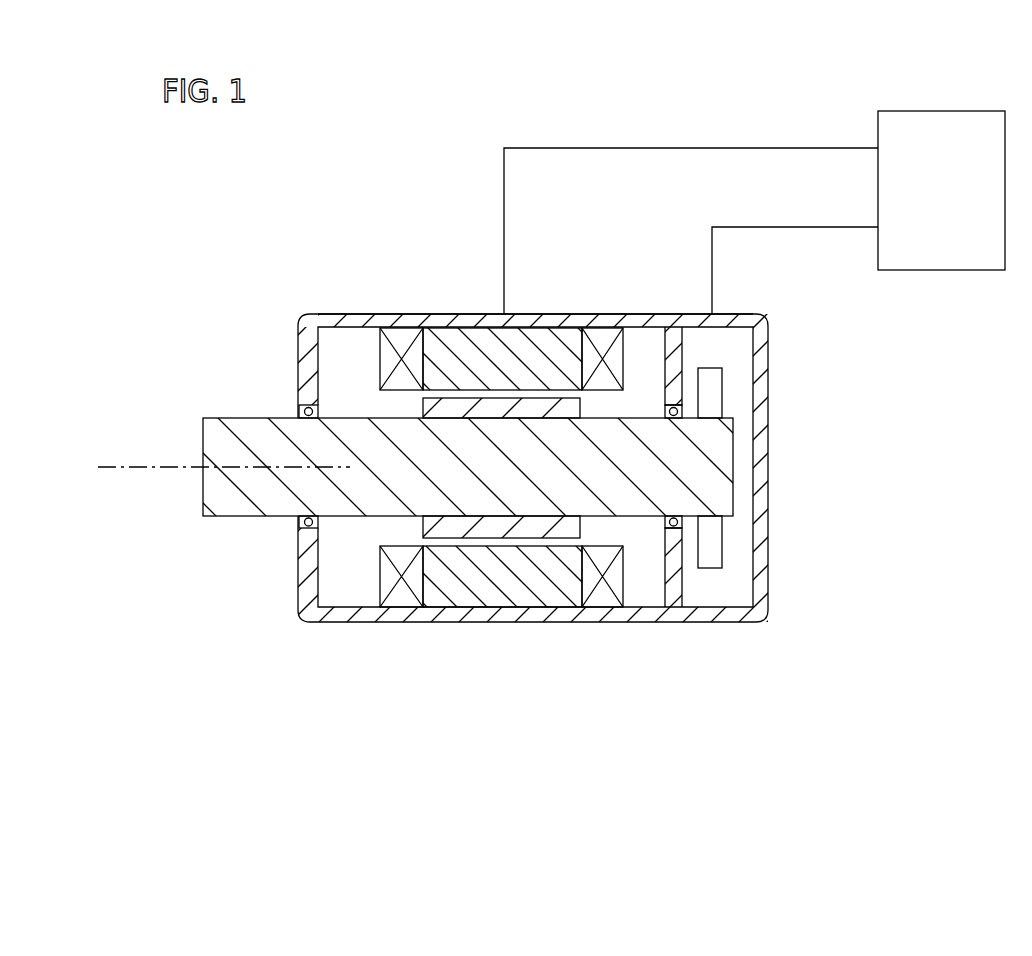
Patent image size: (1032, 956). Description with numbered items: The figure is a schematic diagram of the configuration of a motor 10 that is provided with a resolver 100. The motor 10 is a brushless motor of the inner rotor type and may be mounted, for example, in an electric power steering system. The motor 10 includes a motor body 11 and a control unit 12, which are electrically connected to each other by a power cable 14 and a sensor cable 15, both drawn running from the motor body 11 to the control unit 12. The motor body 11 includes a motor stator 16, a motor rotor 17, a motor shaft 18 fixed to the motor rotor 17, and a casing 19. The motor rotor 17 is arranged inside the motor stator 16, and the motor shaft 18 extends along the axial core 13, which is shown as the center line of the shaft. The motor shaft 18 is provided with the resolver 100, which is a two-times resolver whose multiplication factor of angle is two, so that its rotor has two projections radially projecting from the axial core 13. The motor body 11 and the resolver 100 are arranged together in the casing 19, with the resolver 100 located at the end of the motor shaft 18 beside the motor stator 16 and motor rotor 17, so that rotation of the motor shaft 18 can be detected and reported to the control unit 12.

The motor 10 is at (272, 284).
The motor body 11 is at (500, 636).
The control unit 12 is at (942, 111).
The axial core 13 is at (148, 468).
The power cable 14 is at (691, 148).
The sensor cable 15 is at (800, 227).
The motor stator 16 is at (465, 340).
The motor rotor 17 is at (423, 407).
The motor shaft 18 is at (252, 516).
The casing 19 is at (366, 314).
The resolver 100 is at (722, 400).